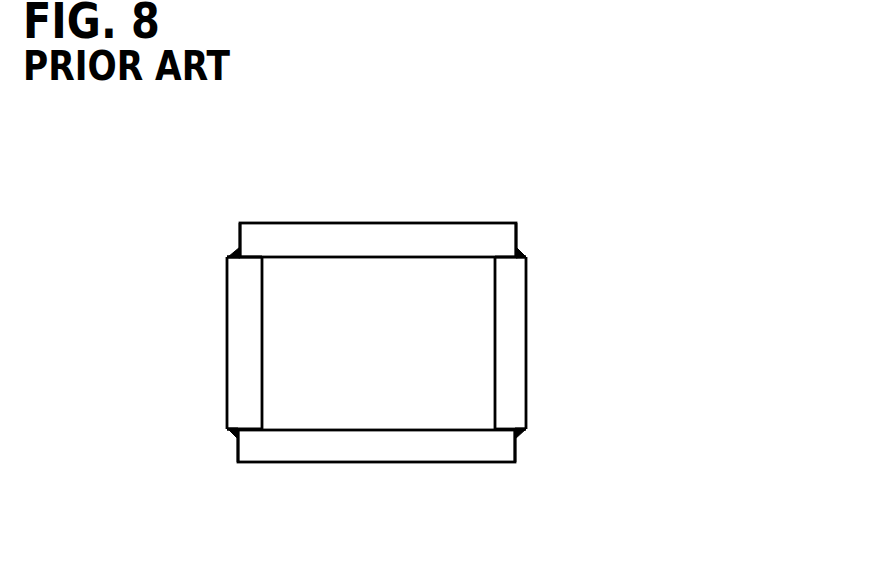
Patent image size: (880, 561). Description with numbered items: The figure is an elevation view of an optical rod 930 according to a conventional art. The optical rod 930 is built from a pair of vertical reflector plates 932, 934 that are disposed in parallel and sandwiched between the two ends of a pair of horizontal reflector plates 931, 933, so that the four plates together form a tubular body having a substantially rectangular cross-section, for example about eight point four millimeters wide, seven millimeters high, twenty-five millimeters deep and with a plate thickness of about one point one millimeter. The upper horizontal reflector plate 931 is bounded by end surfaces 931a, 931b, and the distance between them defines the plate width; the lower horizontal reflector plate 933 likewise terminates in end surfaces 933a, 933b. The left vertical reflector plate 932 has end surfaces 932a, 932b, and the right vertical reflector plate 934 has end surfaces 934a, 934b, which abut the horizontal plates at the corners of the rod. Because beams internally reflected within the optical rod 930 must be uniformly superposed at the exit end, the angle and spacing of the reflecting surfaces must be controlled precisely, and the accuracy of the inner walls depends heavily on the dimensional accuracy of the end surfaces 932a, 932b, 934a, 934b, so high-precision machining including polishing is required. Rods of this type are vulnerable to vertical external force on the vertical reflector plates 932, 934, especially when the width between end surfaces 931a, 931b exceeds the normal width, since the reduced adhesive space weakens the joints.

The optical rod 930 is at (580, 86).
The horizontal reflector plate 931 is at (370, 240).
The end surface of horizontal reflector plate 931a is at (238, 236).
The end surface of horizontal reflector plate 931b is at (517, 235).
The vertical reflector plate 932 is at (240, 322).
The end surface of vertical reflector plate 932a is at (250, 427).
The end surface of vertical reflector plate 932b is at (253, 262).
The horizontal reflector plate 933 is at (390, 455).
The end surface of horizontal reflector plate 933a is at (515, 455).
The end surface of horizontal reflector plate 933b is at (238, 455).
The vertical reflector plate 934 is at (515, 366).
The end surface of vertical reflector plate 934a is at (506, 262).
The end surface of vertical reflector plate 934b is at (507, 427).